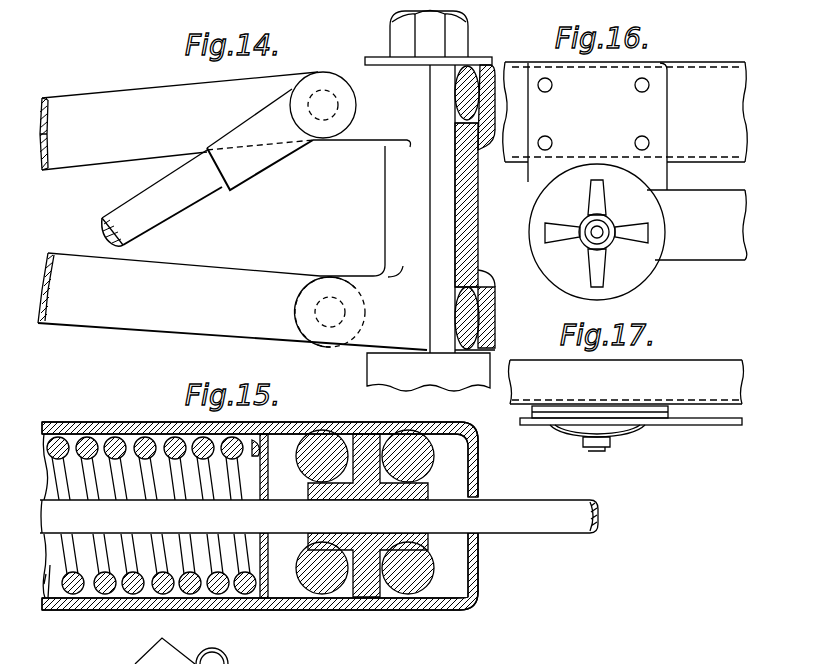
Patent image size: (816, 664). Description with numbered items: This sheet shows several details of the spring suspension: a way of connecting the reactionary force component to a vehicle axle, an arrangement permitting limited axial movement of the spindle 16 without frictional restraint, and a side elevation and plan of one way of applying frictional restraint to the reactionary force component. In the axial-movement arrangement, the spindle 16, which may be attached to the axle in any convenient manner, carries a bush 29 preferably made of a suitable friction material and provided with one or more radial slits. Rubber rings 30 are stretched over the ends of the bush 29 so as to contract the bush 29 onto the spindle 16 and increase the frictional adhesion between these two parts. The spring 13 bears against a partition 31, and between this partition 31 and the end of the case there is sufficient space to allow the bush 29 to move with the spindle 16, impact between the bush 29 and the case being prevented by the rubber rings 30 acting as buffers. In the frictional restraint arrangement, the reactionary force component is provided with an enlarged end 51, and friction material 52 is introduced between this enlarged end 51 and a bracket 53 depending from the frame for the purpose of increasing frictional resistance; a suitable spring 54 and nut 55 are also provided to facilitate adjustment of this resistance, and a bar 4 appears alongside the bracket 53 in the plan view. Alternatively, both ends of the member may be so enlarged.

In FIG. 17, the bar 4 is at (716, 426).
In FIG. 15, the spring 13 is at (125, 592).
In FIG. 15, the spindle 16 is at (550, 510).
In FIG. 15, the bush 29 is at (415, 487).
In FIG. 15, the rubber rings 30 is at (405, 445).
In FIG. 15, the partition 31 is at (263, 590).
In FIG. 16, the enlarged end 51 is at (553, 253).
In FIG. 17, the friction material 52 is at (640, 414).
In FIG. 16, the bracket 53 is at (645, 110).
In FIG. 17, the bracket 53 is at (547, 410).
In FIG. 16, the spring 54 is at (637, 232).
In FIG. 17, the spring 54 is at (645, 432).
In FIG. 16, the nut 55 is at (614, 244).
In FIG. 17, the nut 55 is at (597, 452).